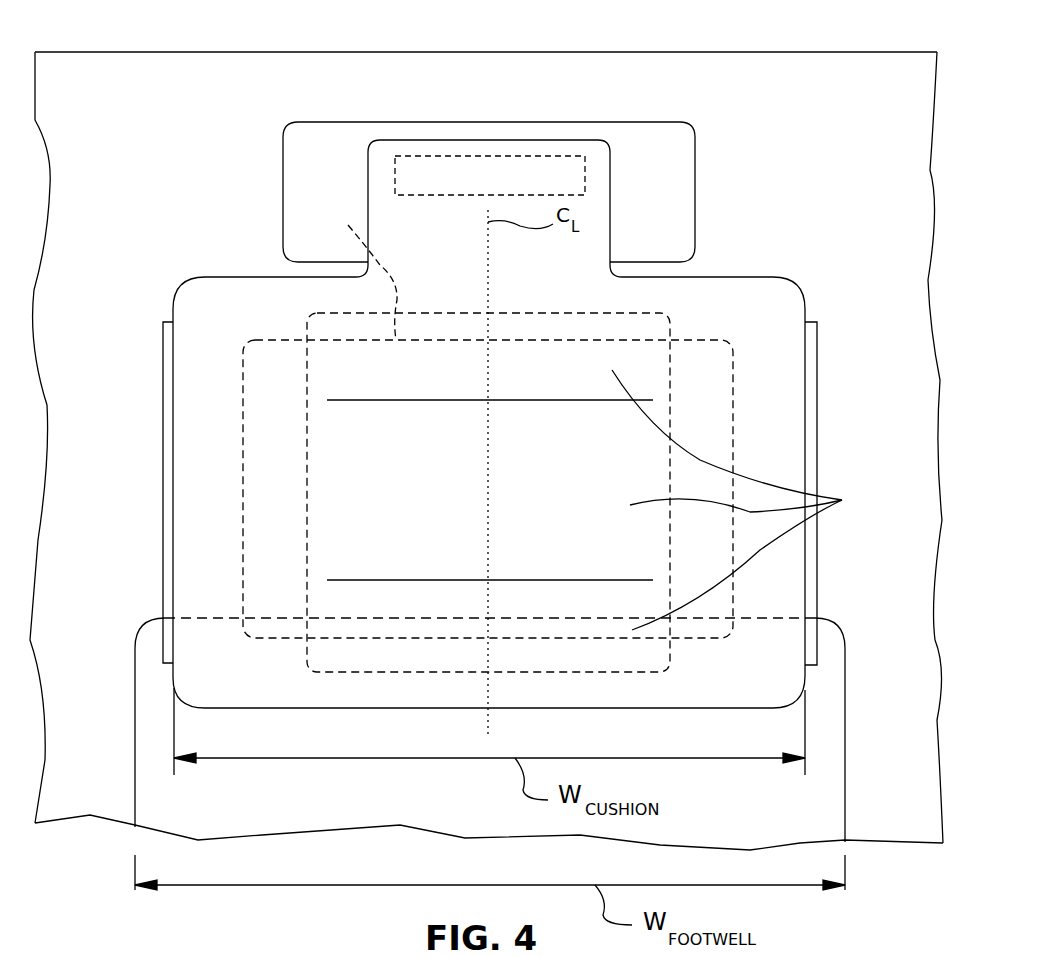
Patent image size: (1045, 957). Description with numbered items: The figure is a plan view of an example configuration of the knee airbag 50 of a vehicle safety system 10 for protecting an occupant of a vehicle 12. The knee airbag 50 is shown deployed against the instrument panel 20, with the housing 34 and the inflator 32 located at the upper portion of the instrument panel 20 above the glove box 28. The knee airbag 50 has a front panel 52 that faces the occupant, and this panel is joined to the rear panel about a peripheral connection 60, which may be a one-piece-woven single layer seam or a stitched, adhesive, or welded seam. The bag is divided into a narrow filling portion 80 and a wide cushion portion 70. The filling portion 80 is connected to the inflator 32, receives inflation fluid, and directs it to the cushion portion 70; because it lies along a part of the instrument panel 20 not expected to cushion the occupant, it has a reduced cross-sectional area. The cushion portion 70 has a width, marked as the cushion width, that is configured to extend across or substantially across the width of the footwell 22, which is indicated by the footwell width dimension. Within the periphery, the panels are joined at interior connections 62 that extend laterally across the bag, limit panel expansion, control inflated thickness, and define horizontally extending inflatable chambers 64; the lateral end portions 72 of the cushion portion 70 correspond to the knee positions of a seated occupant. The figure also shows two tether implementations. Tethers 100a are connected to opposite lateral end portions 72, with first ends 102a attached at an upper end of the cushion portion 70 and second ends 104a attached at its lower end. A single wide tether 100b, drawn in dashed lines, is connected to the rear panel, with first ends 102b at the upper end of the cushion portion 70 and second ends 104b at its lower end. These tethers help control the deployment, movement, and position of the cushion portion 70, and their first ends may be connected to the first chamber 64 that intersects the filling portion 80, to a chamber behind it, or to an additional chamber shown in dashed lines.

The vehicle safety system 10 is at (278, 228).
The vehicle 12 is at (110, 80).
The instrument panel 20 is at (700, 125).
The footwell 22 is at (845, 745).
The glove box 28 is at (362, 270).
The inflator 32 is at (452, 177).
The housing 34 is at (608, 122).
The knee airbag 50 is at (203, 342).
The front panel 52 is at (185, 490).
The peripheral connection 60 is at (732, 274).
The interior connections 62 is at (505, 400).
The inflatable chambers 64 is at (742, 500).
The cushion portion 70 is at (770, 330).
The lateral end portions 72 is at (215, 285).
The filling portion 80 is at (578, 258).
The tethers 100a is at (165, 528).
The tether 100b is at (452, 313).
The first ends 102a is at (163, 332).
The first ends 102b is at (340, 327).
The second ends 104a is at (165, 643).
The second ends 104b is at (338, 672).